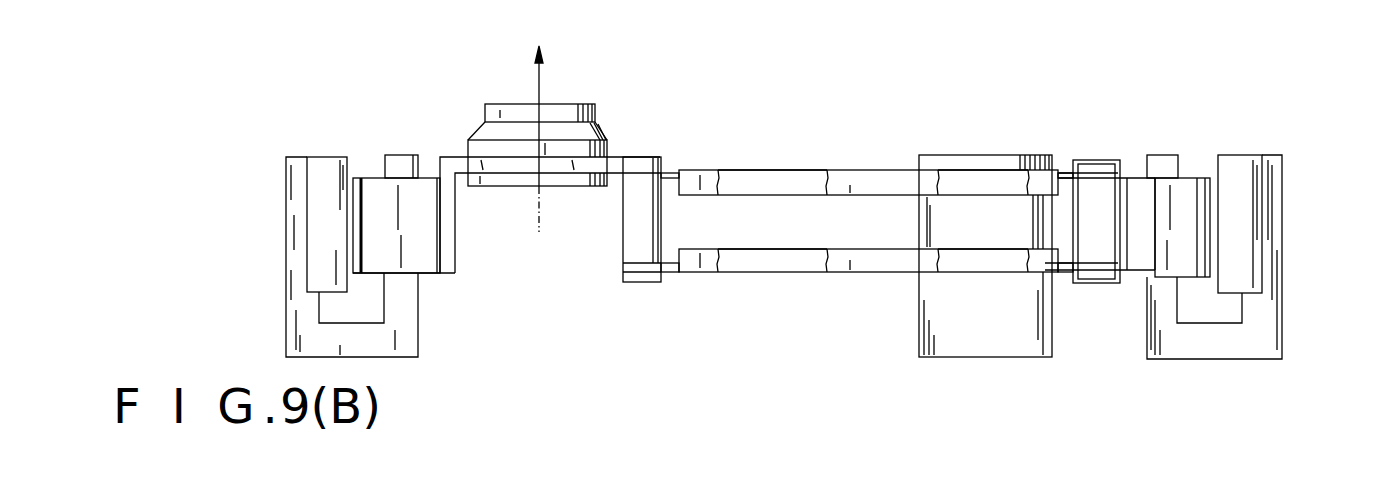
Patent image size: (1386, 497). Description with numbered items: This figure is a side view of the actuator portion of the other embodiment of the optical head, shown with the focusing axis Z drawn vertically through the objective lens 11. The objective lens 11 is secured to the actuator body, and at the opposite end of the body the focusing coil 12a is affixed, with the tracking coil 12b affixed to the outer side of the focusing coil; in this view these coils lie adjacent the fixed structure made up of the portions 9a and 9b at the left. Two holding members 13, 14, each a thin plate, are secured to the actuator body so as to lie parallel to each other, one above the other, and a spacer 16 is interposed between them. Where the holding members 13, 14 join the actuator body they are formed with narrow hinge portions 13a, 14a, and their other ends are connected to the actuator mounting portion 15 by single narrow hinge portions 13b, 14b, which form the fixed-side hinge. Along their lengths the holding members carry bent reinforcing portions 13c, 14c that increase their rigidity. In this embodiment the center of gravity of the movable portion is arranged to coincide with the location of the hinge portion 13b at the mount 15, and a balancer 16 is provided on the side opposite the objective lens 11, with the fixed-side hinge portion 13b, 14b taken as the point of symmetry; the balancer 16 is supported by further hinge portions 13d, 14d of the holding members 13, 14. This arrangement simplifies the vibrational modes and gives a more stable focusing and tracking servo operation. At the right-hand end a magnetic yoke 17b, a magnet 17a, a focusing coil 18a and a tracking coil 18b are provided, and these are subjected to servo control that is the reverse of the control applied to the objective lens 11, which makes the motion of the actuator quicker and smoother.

The Z axis Z is at (538, 122).
The fixed frame inner portion 9a is at (329, 162).
The fixed frame outer portion 9b is at (287, 193).
The objective lens 11 is at (570, 103).
The focusing coil 12a is at (430, 273).
The tracking coil 12b is at (357, 180).
The holding member 13 is at (832, 172).
The hinge portion 13a is at (673, 172).
The hinge portion 13b is at (922, 170).
The bent reinforcing portion 13c is at (780, 178).
The hinge portion 13d is at (1062, 170).
The holding member 14 is at (860, 253).
The hinge portion 14a is at (673, 272).
The hinge portion 14b is at (916, 272).
The bent reinforcing portion 14c is at (775, 272).
The hinge portion 14d is at (1063, 277).
The actuator mounting portion 15 is at (1033, 352).
The balancer 16 is at (627, 220).
The magnet 17a is at (1248, 163).
The magnetic yoke 17b is at (1275, 157).
The focusing coil 18a is at (1190, 180).
The tracking coil 18b is at (1203, 270).